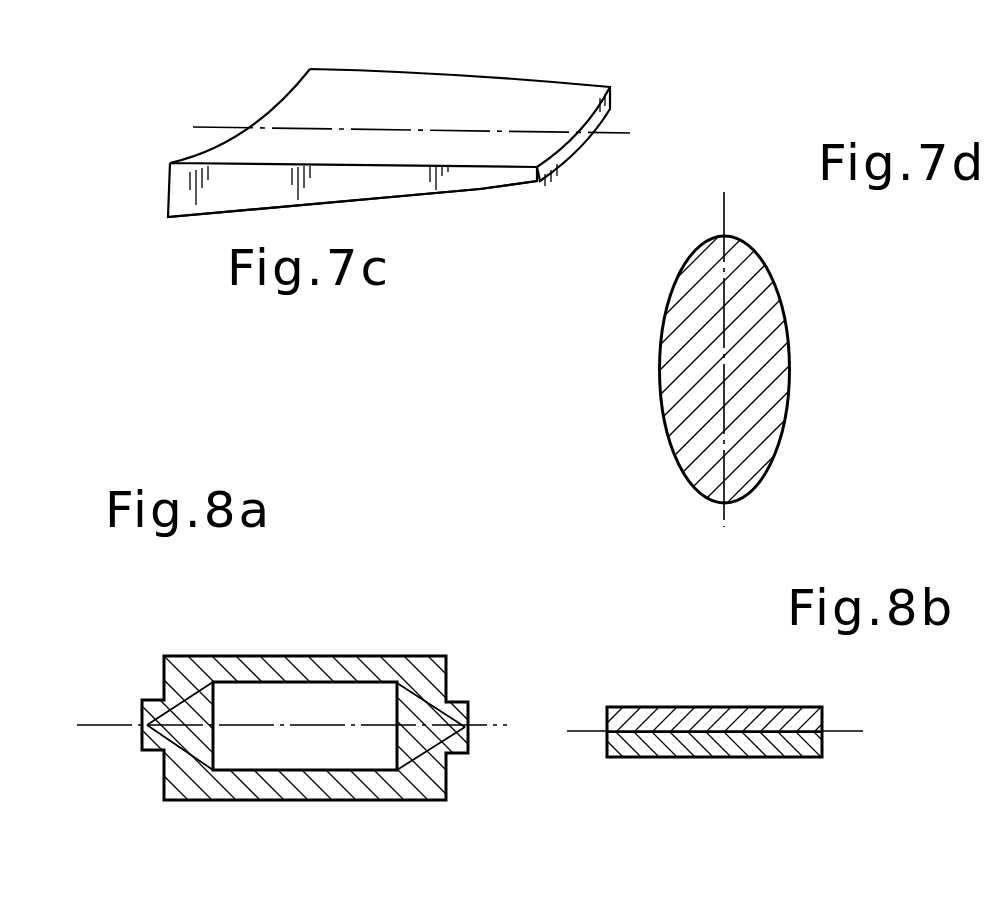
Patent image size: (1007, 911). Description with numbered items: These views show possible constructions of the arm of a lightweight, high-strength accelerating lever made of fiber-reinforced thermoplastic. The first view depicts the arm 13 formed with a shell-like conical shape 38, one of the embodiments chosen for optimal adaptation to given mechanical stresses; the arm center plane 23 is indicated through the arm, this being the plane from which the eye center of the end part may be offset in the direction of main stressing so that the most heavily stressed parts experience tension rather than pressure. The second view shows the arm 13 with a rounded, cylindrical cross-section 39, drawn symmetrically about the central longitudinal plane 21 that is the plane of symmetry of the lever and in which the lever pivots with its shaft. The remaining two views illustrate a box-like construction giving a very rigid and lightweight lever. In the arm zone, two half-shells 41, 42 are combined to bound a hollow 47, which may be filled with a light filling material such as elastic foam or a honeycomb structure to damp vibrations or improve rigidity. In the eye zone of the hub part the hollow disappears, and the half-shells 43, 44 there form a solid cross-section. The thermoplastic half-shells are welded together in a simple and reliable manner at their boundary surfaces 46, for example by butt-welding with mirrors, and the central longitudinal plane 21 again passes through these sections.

In FIG. 7C, the arm 13 is at (405, 73).
In FIG. 7D, the arm 13 is at (677, 360).
In FIG. 7D, the central longitudinal plane 21 is at (723, 207).
In FIG. 8A, the central longitudinal plane 21 is at (493, 727).
In FIG. 8B, the central longitudinal plane 21 is at (853, 740).
In FIG. 7C, the arm center plane 23 is at (212, 127).
In FIG. 7C, the shell-like conical shape 38 is at (483, 187).
In FIG. 7D, the cylindrical cross-section 39 is at (782, 290).
In FIG. 8A, the half-shell 41 is at (302, 665).
In FIG. 8A, the half-shell 42 is at (313, 780).
In FIG. 8B, the half-shell 43 is at (695, 717).
In FIG. 8B, the half-shell 44 is at (710, 757).
In FIG. 8A, the boundary surfaces 46 is at (188, 732).
In FIG. 8B, the boundary surfaces 46 is at (660, 734).
In FIG. 8A, the hollow 47 is at (360, 712).